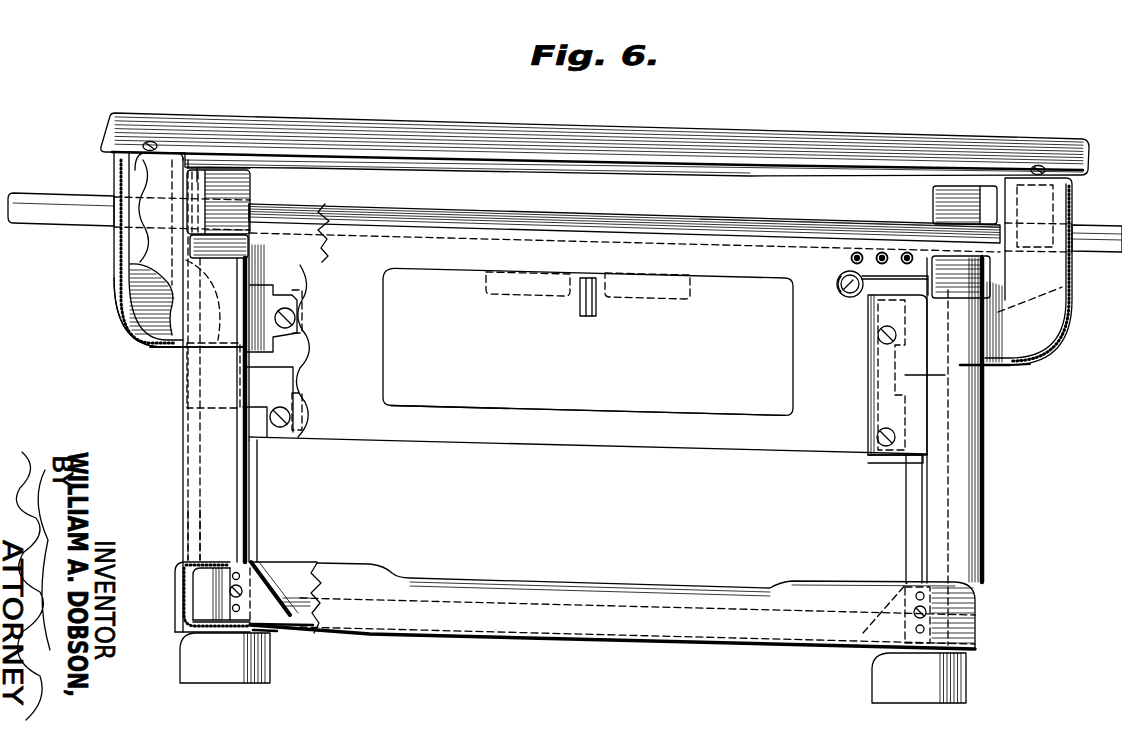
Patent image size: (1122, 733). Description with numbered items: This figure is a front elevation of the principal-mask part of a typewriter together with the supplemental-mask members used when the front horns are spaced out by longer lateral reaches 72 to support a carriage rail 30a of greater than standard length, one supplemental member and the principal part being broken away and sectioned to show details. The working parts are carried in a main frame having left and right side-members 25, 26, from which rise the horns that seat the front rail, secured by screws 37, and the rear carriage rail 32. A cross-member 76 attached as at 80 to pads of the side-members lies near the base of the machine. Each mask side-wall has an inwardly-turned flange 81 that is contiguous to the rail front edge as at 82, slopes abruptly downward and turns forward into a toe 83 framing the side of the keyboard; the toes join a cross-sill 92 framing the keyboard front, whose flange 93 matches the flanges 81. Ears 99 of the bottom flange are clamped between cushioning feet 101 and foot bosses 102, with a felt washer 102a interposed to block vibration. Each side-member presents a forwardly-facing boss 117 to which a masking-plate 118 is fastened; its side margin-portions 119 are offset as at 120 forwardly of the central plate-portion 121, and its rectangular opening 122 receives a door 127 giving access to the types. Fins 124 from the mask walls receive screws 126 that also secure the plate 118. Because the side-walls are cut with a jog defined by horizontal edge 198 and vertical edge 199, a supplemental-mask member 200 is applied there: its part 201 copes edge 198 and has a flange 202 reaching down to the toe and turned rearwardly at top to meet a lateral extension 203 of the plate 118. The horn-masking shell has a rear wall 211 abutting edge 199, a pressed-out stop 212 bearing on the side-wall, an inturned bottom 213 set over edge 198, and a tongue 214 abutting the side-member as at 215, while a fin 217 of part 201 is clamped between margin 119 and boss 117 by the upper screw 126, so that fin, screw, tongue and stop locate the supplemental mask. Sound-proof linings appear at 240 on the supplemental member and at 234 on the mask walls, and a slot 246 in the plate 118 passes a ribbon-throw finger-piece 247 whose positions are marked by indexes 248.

The carriage rail 30a is at (750, 140).
The rear carriage rail 32 is at (58, 205).
The screws 37 is at (1043, 165).
The lateral reaches 72 is at (147, 253).
The inwardly-turned flange 81 is at (193, 455).
The contiguous point 82 is at (163, 157).
The sill or toe 83 is at (210, 563).
The cross-sill 92 is at (620, 617).
The inwardly-turned flange 93 is at (557, 575).
The ears 99 is at (276, 635).
The cushioning feet 101 is at (200, 660).
The foot bosses 102 is at (197, 607).
The washer 102a is at (183, 621).
The pad or boss 117 is at (885, 460).
The masking-plate 118 is at (567, 433).
The side margin-portions 119 is at (294, 343).
The offset 120 is at (868, 405).
The plate-portion 121 is at (816, 352).
The rectangular opening 122 is at (477, 412).
The wings or fins 124 is at (268, 422).
The screws 126 is at (295, 311).
The door 127 is at (588, 341).
The horizontal edge 198 is at (203, 361).
The vertical edge 199 is at (228, 167).
The supplemental-mask member 200 is at (117, 245).
The part 201 is at (227, 245).
The flange 202 is at (983, 380).
The lateral extension 203 is at (875, 238).
The rear wall 211 is at (203, 213).
The lug or stop 212 is at (197, 177).
The inturned bottom 213 is at (167, 351).
The tongue 214 is at (213, 334).
The abutment 215 is at (269, 399).
The fin 217 is at (255, 288).
The sound-proofing lining 234 is at (203, 534).
The sound-proof lining 240 is at (122, 312).
The slot 246 is at (926, 257).
The finger-piece 247 is at (841, 294).
The indexes 248 is at (849, 257).
The left side-member 25 is at (251, 497).
The right side-member 26 is at (917, 532).
The cross-member 76 is at (297, 604).
The attachment 80 is at (896, 585).